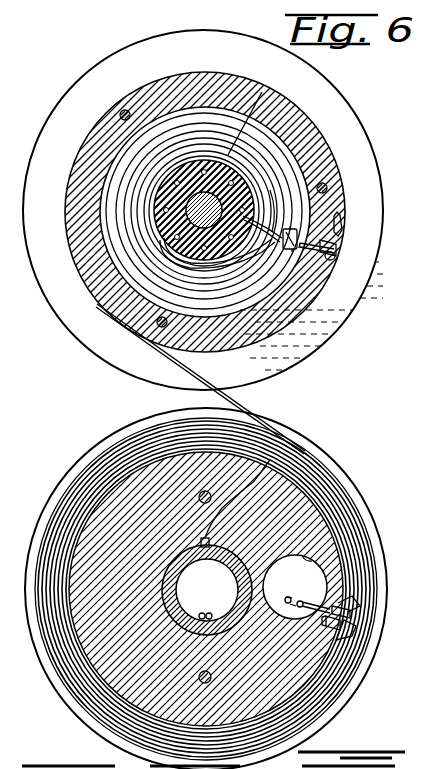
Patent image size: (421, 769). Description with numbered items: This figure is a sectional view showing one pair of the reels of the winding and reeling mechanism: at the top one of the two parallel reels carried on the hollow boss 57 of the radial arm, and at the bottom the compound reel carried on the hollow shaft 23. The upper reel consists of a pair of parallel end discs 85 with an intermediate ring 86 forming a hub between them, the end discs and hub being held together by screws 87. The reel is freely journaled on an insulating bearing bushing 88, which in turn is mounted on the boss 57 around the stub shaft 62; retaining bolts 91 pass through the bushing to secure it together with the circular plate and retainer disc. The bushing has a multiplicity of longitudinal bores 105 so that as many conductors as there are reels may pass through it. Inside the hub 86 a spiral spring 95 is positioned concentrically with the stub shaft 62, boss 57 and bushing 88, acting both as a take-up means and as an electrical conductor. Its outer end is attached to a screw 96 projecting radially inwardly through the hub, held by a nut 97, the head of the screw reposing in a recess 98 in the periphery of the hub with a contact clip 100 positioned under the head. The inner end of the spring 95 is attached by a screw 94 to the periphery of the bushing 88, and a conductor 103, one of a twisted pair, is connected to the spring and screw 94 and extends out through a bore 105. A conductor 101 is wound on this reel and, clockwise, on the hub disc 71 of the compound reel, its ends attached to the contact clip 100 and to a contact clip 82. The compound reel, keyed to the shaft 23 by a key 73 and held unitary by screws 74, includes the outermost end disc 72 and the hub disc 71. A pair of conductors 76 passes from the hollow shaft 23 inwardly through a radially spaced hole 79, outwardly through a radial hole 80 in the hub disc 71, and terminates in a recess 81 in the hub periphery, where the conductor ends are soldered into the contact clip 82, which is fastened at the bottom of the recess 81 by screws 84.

The end disc 85 is at (69, 104).
The intermediate ring 86 is at (183, 73).
The screws 87 is at (125, 108).
The retaining bolts 91 is at (288, 107).
The stub shaft 62 is at (225, 178).
The bearing bushing 88 is at (240, 190).
The longitudinal bore 105 is at (201, 165).
The spiral spring 95 is at (278, 210).
The nuts 97 is at (296, 233).
The recess 98 is at (343, 212).
The screws 96 is at (338, 246).
The contact clip 100 is at (335, 257).
The hollow boss 57 is at (152, 208).
The conductor 103 is at (157, 253).
The screws 94 is at (257, 231).
The conductor 101 is at (254, 402).
The outermost end disc 72 is at (81, 460).
The hub disc 71 is at (300, 503).
The shaft 23 is at (207, 590).
The screws 74 is at (204, 491).
The key 73 is at (292, 456).
The hole 80 is at (322, 600).
The hole 79 is at (307, 560).
The conductors 76 is at (208, 612).
The contact clip 82 is at (352, 624).
The screws 84 is at (362, 648).
The recess 81 is at (368, 663).